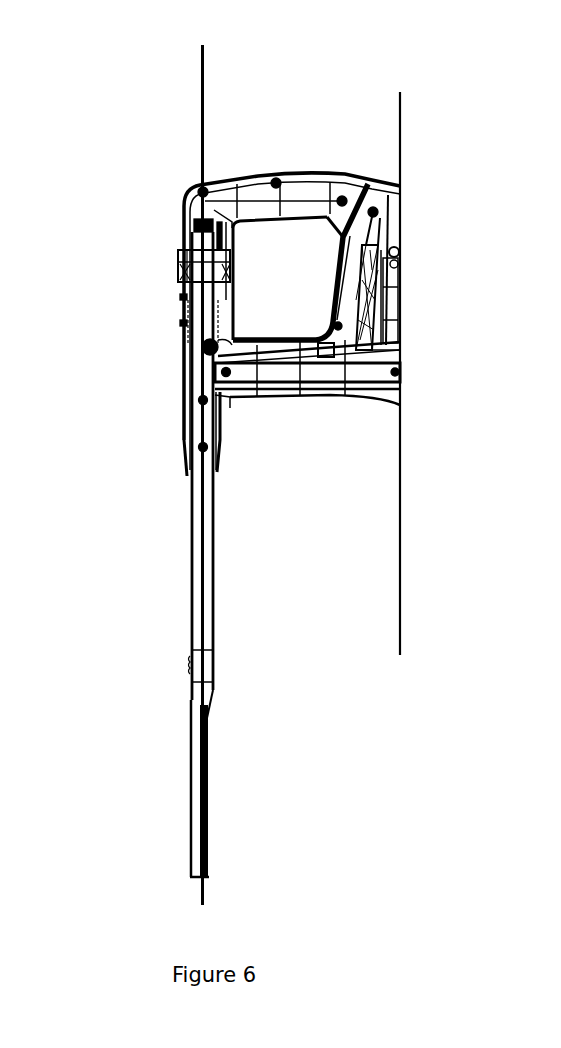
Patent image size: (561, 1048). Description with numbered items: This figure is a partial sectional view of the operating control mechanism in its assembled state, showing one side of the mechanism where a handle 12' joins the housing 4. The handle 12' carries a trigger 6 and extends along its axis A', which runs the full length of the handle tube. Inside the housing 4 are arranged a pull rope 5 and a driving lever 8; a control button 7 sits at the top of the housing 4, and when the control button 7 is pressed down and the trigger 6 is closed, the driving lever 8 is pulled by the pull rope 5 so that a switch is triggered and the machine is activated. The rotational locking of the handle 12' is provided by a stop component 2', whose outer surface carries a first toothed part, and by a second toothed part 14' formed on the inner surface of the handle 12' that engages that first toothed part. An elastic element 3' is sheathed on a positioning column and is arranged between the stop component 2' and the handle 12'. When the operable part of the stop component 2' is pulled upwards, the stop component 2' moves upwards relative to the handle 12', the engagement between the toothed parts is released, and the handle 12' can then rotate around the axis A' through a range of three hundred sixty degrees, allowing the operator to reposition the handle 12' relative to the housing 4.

The axis A' is at (142, 464).
The handle 12' is at (235, 213).
The elastic element 3' is at (152, 329).
The second toothed part 14' is at (144, 254).
The stop component 2' is at (156, 308).
The housing 4 is at (183, 392).
The pull rope 5 is at (275, 360).
The trigger 6 is at (262, 224).
The control button 7 is at (390, 193).
The driving lever 8 is at (373, 360).